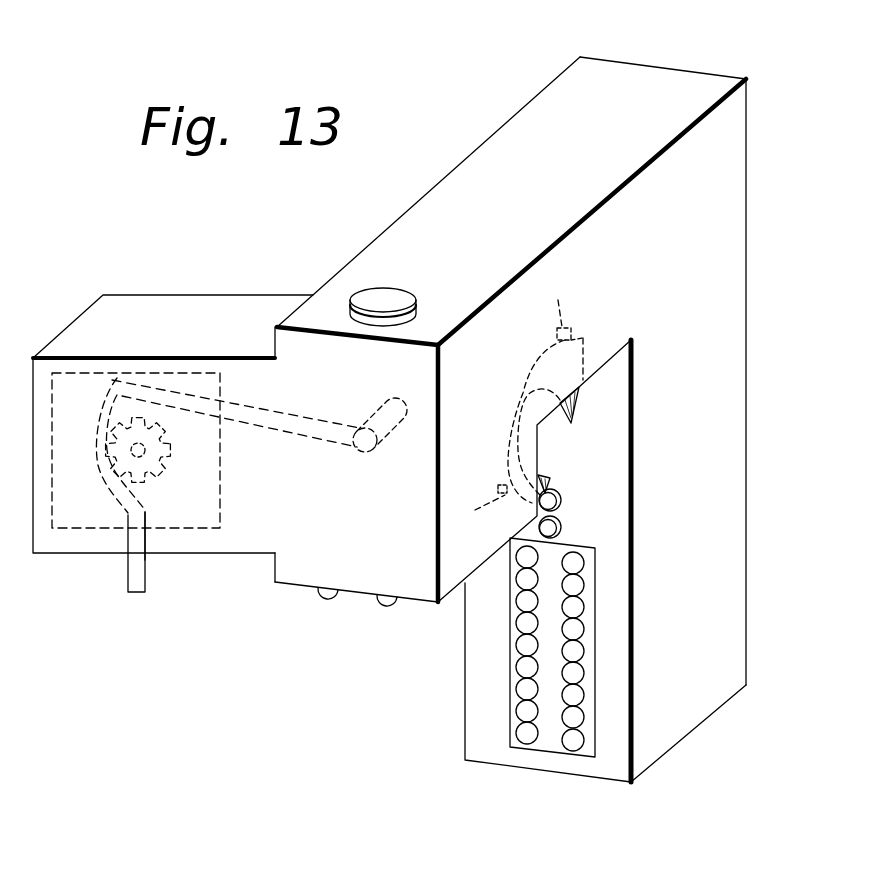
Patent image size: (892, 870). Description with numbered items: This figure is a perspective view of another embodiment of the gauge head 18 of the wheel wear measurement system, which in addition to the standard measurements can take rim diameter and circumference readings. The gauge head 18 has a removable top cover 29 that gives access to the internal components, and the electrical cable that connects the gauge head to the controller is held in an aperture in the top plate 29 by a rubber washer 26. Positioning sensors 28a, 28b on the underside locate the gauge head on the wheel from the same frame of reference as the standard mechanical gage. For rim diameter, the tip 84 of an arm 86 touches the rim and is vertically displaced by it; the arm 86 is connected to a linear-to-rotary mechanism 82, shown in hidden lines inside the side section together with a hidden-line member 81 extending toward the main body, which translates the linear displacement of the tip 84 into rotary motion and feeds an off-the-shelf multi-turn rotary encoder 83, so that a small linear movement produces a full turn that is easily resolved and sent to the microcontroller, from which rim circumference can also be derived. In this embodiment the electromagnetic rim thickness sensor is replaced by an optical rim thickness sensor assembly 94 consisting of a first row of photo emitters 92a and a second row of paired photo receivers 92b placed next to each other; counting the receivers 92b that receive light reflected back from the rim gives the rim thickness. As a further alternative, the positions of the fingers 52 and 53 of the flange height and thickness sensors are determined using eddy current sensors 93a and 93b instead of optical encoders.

The gauge head 18 is at (738, 382).
The top cover 29 is at (628, 78).
The rubber washer 26 is at (407, 297).
The positioning sensor 28a is at (320, 597).
The positioning sensor 28b is at (385, 605).
The multi-turn rotary encoder 83 is at (88, 518).
The linear-to-rotary mechanism 82 is at (98, 445).
The drive belt 81 is at (232, 402).
The tip 84 is at (130, 593).
The arm 86 is at (137, 543).
The eddy current sensor 93a is at (565, 332).
The eddy current sensor 93b is at (502, 485).
The finger 52 is at (576, 412).
The finger 53 is at (552, 480).
The rim thickness sensor assembly 94 is at (545, 743).
The first row of photo emitters 92a is at (520, 560).
The second row of paired photo receivers 92b is at (577, 562).